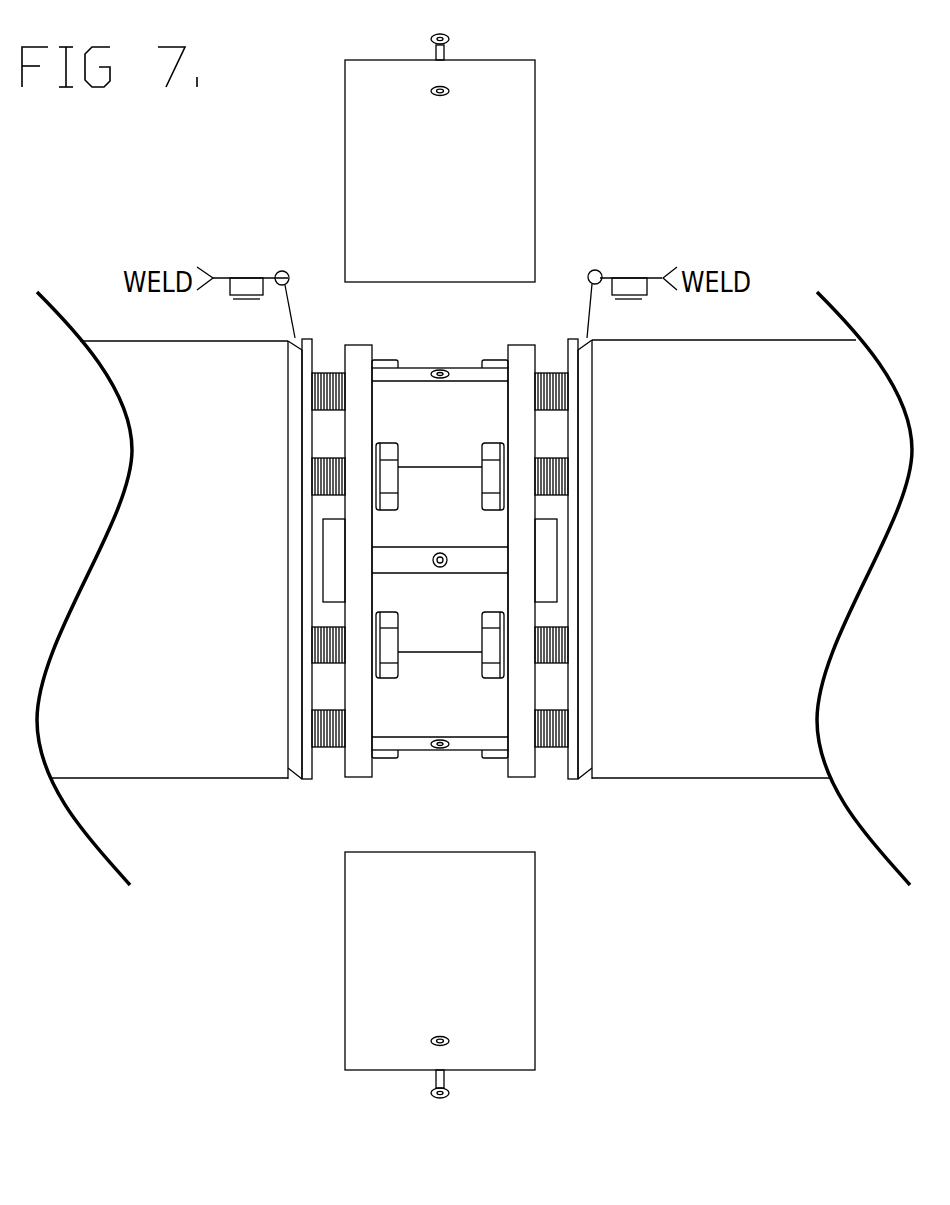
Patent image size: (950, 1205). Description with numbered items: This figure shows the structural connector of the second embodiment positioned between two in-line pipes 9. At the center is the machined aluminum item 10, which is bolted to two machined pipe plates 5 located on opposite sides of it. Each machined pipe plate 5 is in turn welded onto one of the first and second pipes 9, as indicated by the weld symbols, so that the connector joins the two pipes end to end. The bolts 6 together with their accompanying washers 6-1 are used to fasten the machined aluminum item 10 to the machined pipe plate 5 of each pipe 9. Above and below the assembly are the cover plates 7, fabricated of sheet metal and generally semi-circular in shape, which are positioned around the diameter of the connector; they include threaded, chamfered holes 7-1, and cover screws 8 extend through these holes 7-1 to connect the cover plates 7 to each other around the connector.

The machined pipe plate 5 is at (441, 589).
The bolts 6 is at (338, 489).
The washers 6-1 is at (373, 618).
The cover plates 7 is at (412, 592).
The threaded holes 7-1 is at (339, 566).
The cover screws 8 is at (388, 586).
The pipes 9 is at (160, 718).
The machined aluminum item 10 is at (446, 522).